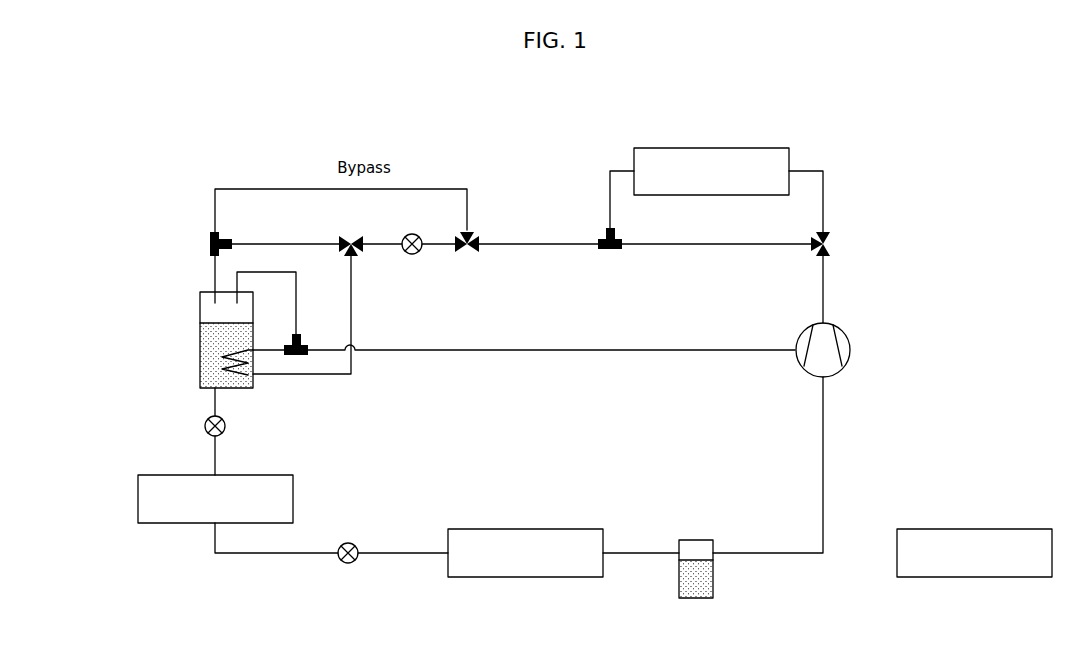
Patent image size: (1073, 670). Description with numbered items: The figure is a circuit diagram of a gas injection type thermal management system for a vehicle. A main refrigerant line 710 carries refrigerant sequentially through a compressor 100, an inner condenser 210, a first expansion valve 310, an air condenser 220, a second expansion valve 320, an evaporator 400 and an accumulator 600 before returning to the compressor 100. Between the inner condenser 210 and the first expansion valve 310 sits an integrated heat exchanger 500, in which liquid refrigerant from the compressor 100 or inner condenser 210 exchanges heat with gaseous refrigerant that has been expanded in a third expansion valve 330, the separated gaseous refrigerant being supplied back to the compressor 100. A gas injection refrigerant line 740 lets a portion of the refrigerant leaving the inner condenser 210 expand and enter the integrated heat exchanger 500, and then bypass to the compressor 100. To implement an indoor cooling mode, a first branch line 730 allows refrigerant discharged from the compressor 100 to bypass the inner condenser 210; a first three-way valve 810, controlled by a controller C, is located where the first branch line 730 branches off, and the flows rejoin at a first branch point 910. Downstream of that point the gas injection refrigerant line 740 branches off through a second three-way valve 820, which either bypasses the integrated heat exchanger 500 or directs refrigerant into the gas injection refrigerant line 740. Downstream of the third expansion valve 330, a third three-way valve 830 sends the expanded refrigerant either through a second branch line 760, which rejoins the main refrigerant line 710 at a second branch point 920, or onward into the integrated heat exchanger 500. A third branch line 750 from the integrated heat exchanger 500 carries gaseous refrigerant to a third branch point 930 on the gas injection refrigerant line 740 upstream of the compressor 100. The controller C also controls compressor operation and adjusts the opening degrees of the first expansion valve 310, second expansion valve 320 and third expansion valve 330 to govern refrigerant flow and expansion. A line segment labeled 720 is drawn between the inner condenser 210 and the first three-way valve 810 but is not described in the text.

The compressor 100 is at (851, 350).
The inner condenser 210 is at (712, 148).
The air condenser 220 is at (137, 497).
The first expansion valve 310 is at (204, 426).
The second expansion valve 320 is at (348, 564).
The third expansion valve 330 is at (419, 252).
The evaporator 400 is at (527, 529).
The integrated heat exchanger 500 is at (199, 299).
The accumulator 600 is at (696, 540).
The main refrigerant line 710 is at (824, 297).
The second refrigerant line 720 is at (824, 194).
The first branch line 730 is at (713, 248).
The gas injection refrigerant line 740 is at (393, 247).
The third branch line 750 is at (296, 356).
The second branch line 760 is at (257, 243).
The first three-way valve 810 is at (830, 250).
The second three-way valve 820 is at (470, 238).
The third three-way valve 830 is at (349, 237).
The first branch point 910 is at (610, 252).
The second branch point 920 is at (209, 241).
The third branch point 930 is at (297, 302).
The controller C is at (968, 529).